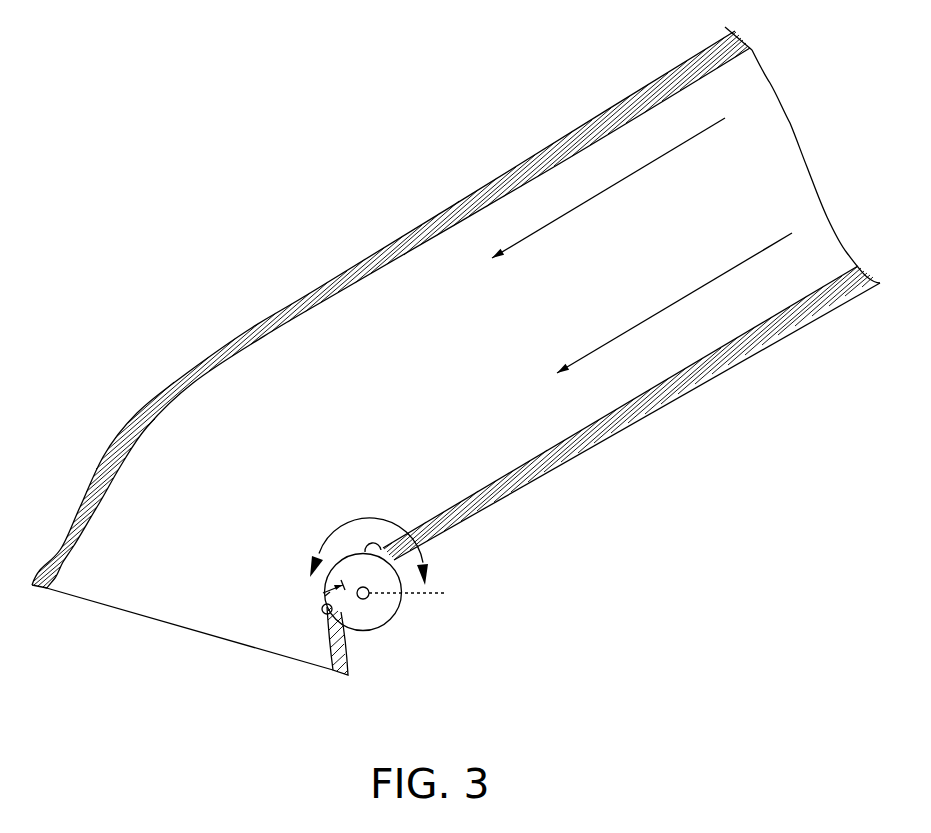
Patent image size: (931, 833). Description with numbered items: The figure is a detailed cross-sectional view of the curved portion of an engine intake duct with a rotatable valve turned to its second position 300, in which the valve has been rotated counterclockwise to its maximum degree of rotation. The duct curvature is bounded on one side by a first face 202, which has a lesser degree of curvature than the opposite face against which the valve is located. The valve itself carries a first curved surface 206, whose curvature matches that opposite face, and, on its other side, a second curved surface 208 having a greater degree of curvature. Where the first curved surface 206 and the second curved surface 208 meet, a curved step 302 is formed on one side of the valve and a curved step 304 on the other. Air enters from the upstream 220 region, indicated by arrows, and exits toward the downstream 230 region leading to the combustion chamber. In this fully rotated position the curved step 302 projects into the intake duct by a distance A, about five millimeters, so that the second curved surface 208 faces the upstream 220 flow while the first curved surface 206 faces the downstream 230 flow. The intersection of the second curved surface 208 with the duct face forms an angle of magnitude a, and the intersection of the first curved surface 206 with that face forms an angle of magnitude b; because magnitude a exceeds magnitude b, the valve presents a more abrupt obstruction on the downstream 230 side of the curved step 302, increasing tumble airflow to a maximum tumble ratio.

The second position 300 is at (242, 133).
The first face 202 is at (128, 443).
The first curved surface 206 is at (356, 624).
The second curved surface 208 is at (338, 553).
The upstream region 220 is at (642, 273).
The downstream region 230 is at (172, 604).
The curved step 302 is at (323, 593).
The curved step 304 is at (375, 630).
The distance A is at (330, 592).
The angle magnitude a is at (327, 611).
The angle magnitude b is at (376, 546).